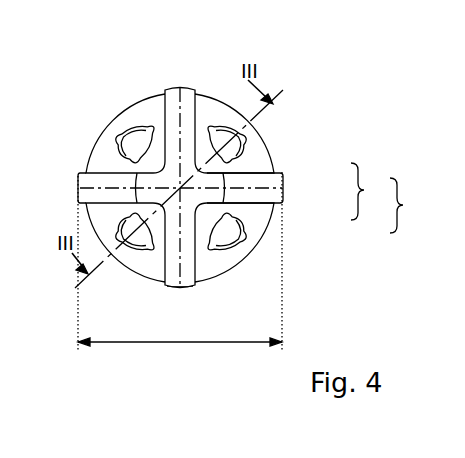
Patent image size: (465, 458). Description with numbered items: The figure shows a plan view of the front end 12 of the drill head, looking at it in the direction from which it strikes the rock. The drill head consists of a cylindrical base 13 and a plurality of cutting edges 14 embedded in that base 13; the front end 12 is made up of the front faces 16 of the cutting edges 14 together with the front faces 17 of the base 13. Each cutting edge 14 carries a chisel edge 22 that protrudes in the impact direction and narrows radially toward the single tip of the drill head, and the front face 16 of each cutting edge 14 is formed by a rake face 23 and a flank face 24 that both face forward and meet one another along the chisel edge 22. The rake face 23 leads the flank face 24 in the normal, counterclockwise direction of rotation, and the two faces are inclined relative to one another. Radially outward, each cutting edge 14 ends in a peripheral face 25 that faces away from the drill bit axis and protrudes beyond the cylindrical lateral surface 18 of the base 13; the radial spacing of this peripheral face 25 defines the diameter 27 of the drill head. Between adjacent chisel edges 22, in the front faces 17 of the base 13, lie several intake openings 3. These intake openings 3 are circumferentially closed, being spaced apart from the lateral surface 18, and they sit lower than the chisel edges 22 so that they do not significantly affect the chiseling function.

The intake opening 3 is at (137, 143).
The front end 12 is at (285, 203).
The base 13 is at (106, 146).
The cutting edge 14 is at (167, 130).
The front face of the cutting edge 16 is at (334, 191).
The front face of the base 17 is at (257, 239).
The lateral surface 18 is at (215, 280).
The chisel edge 22 is at (250, 148).
The rake face 23 is at (262, 205).
The flank face 24 is at (264, 170).
The peripheral face 25 is at (183, 291).
The diameter 27 is at (177, 344).